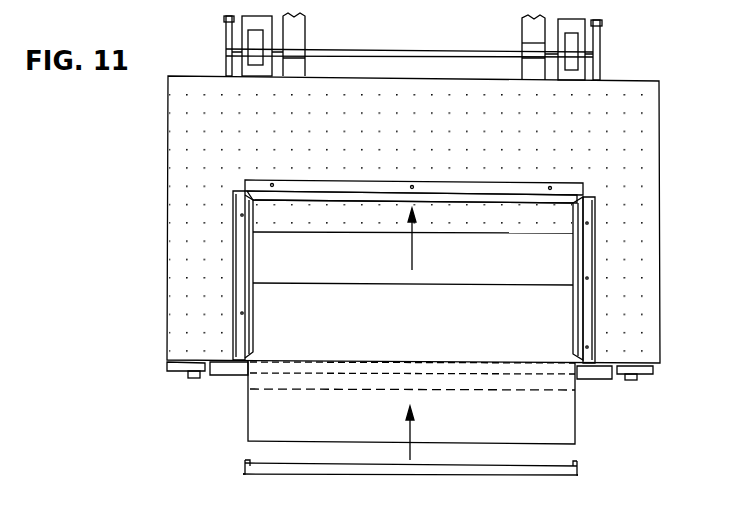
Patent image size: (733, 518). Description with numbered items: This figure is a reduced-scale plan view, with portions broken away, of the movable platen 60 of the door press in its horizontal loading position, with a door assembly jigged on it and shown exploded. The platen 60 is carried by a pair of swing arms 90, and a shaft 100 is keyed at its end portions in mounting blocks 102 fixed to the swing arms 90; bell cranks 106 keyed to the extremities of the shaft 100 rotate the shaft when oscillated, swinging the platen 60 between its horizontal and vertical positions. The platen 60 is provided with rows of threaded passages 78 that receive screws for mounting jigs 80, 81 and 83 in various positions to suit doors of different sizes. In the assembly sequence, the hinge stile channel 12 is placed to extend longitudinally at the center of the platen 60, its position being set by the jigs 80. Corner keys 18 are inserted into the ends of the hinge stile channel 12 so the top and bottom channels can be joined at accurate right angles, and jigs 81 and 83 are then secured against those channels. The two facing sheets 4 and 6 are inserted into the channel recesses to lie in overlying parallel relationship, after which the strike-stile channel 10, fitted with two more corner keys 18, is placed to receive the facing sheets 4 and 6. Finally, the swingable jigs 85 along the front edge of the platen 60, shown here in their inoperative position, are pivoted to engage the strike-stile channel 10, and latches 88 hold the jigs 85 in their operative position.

The facing sheet 4 is at (352, 269).
The facing sheet 6 is at (352, 319).
The strike-stile channel 10 is at (460, 475).
The hinge stile channel 12 is at (488, 200).
The right angle key 18 is at (245, 467).
The movable platen 60 is at (628, 146).
The threaded passage 78 is at (201, 203).
The jig 80 is at (363, 187).
The jig 81 is at (233, 278).
The jig 83 is at (590, 290).
The swingable jig 85 is at (238, 368).
The latch 88 is at (205, 372).
The swing arm 90 is at (305, 31).
The shaft 100 is at (392, 51).
The mounting block 102 is at (303, 57).
The bell crank 106 is at (226, 40).